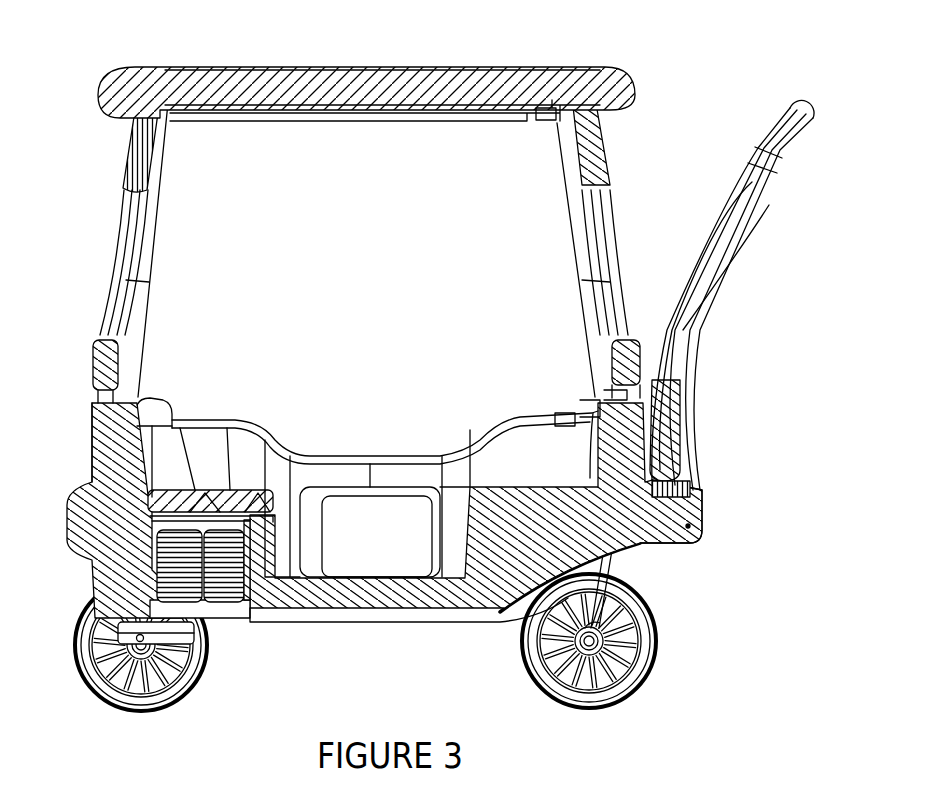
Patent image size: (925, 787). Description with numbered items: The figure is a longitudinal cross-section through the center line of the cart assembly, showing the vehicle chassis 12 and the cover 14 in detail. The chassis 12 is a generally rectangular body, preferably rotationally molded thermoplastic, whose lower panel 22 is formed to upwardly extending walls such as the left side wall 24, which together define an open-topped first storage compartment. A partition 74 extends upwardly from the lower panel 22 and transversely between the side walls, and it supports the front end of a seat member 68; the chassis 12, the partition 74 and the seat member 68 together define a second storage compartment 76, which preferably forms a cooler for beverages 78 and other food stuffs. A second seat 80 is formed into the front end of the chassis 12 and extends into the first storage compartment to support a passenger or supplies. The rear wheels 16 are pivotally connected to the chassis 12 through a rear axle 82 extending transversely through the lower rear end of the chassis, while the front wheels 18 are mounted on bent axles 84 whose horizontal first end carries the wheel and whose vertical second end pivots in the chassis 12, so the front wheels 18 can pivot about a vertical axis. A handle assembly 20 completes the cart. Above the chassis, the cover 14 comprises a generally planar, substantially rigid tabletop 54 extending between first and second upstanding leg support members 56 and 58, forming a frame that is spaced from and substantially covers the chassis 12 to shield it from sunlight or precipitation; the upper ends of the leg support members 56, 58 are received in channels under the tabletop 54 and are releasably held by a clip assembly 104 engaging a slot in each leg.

The vehicle chassis 12 is at (98, 503).
The cover 14 is at (213, 66).
The rear wheels 16 is at (130, 707).
The front wheels 18 is at (630, 680).
The handle assembly 20 is at (717, 350).
The lower panel 22 is at (415, 595).
The left side wall 24 is at (430, 473).
The tabletop 54 is at (316, 66).
The first upstanding leg support member 56 is at (612, 270).
The second upstanding leg support member 58 is at (115, 320).
The seat member 68 is at (240, 597).
The partition 74 is at (305, 592).
The second storage compartment 76 is at (215, 605).
The beverages 78 is at (178, 586).
The second seat 80 is at (652, 545).
The rear axle 82 is at (93, 632).
The bent axle 84 is at (562, 703).
The clip assembly 104 is at (552, 115).